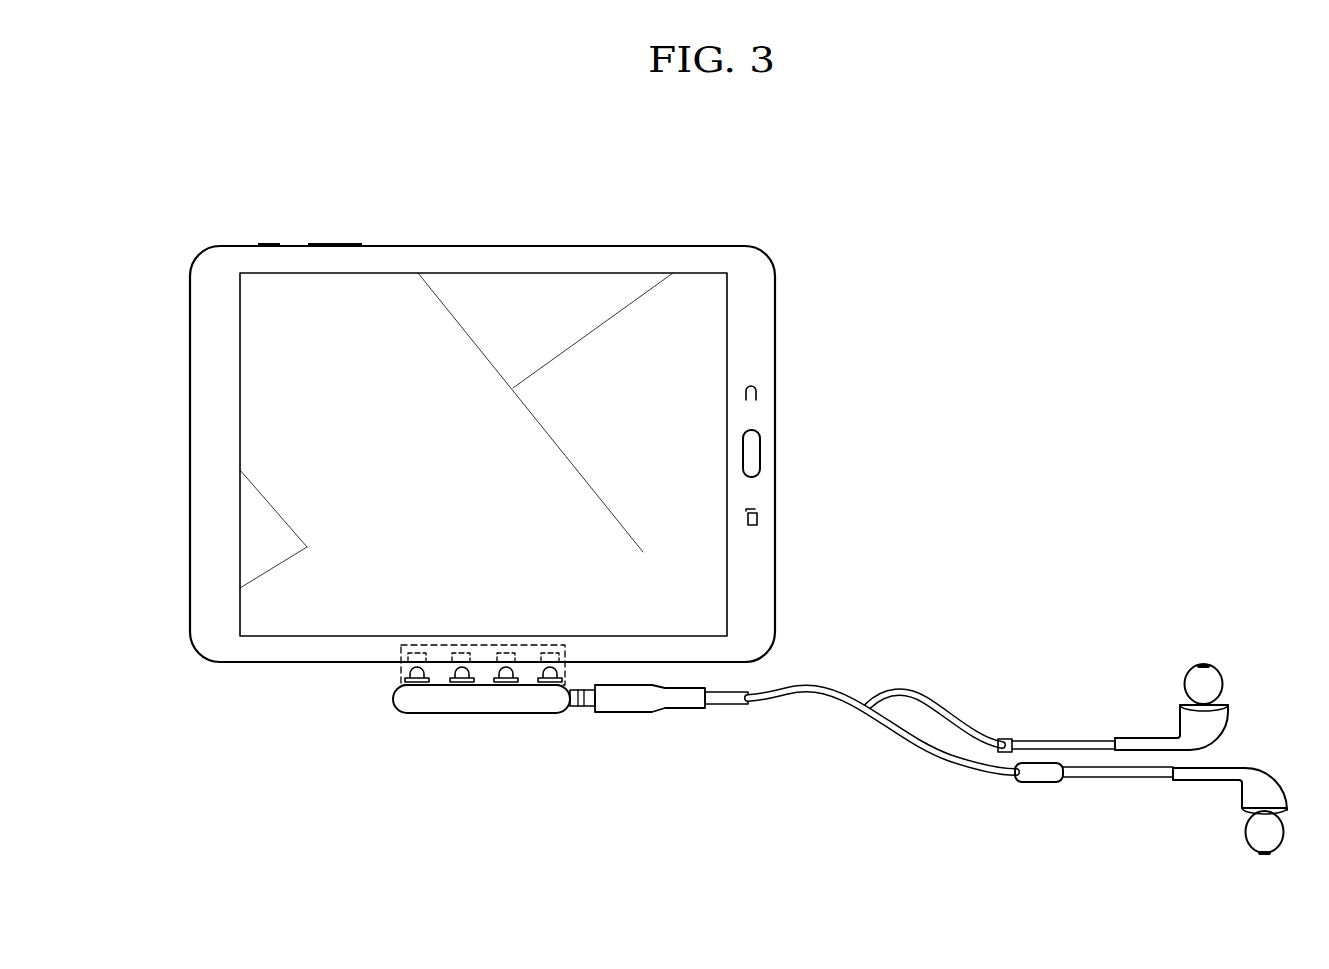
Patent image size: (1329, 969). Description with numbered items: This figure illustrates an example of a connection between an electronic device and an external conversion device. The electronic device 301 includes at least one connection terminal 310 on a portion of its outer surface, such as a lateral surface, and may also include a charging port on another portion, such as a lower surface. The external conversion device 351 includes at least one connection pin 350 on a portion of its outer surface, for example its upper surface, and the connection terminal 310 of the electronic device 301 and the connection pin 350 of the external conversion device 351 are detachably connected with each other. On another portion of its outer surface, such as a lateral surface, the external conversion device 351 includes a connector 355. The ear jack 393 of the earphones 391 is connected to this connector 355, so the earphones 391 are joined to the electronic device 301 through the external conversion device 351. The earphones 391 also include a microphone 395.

The electronic device 301 is at (168, 369).
The connection terminal 310 is at (400, 647).
The connection pin 350 is at (400, 669).
The external conversion device 351 is at (393, 698).
The connector 355 is at (568, 696).
The earphones 391 is at (1017, 742).
The ear jack 393 is at (589, 697).
The microphone 395 is at (1040, 777).